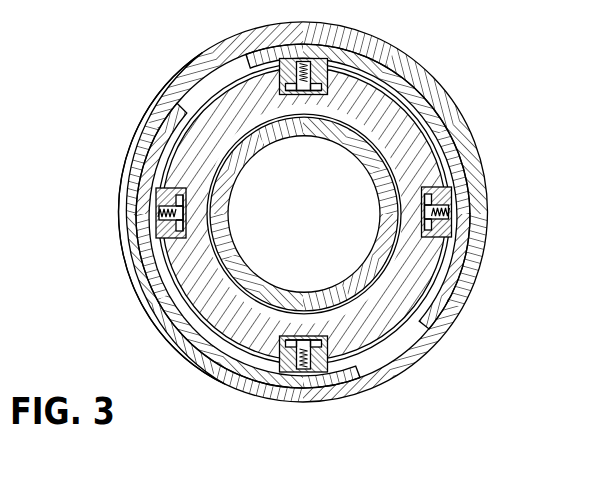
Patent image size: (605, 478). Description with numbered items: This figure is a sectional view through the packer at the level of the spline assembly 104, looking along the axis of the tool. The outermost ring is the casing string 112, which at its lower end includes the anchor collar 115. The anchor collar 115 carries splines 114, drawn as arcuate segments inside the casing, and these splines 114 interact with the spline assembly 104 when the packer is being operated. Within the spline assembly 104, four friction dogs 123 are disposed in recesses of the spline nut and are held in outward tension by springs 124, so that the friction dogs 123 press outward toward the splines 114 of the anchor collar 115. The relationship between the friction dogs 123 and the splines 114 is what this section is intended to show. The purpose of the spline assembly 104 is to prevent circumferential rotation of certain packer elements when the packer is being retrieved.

The spline assembly 104 is at (452, 81).
The casing string 112 is at (141, 181).
The splines 114 is at (178, 131).
The anchor collar 115 is at (150, 261).
The friction dogs 123 is at (315, 366).
The springs 124 is at (283, 367).